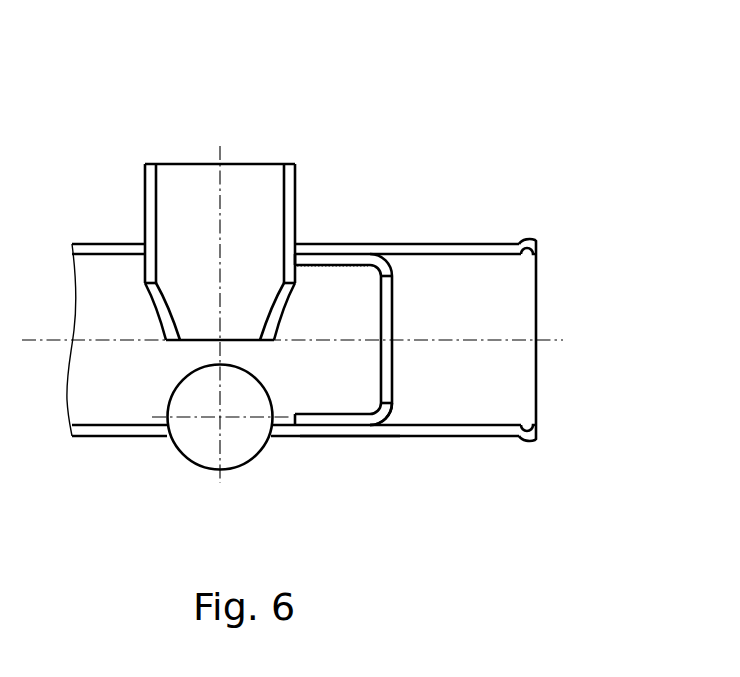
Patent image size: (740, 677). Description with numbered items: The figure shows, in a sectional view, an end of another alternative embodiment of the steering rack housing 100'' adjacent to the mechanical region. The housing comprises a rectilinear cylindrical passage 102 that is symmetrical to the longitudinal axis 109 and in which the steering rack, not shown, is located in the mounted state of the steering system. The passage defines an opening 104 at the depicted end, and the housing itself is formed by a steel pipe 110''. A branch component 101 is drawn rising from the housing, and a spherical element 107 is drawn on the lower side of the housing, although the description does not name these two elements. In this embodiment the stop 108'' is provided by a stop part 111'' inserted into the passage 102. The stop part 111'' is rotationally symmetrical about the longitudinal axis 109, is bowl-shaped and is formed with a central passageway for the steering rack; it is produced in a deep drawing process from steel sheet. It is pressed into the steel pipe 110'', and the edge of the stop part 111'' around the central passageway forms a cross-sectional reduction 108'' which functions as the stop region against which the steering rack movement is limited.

The steering rack housing 100'' is at (327, 301).
The branch pipe 101 is at (296, 217).
The passage 102 is at (325, 357).
The opening 104 is at (535, 320).
The ball 107 is at (178, 453).
The stop 108'' is at (401, 283).
The longitudinal axis 109 is at (321, 314).
The steel pipe 110'' is at (369, 492).
The stop part 111'' is at (477, 464).